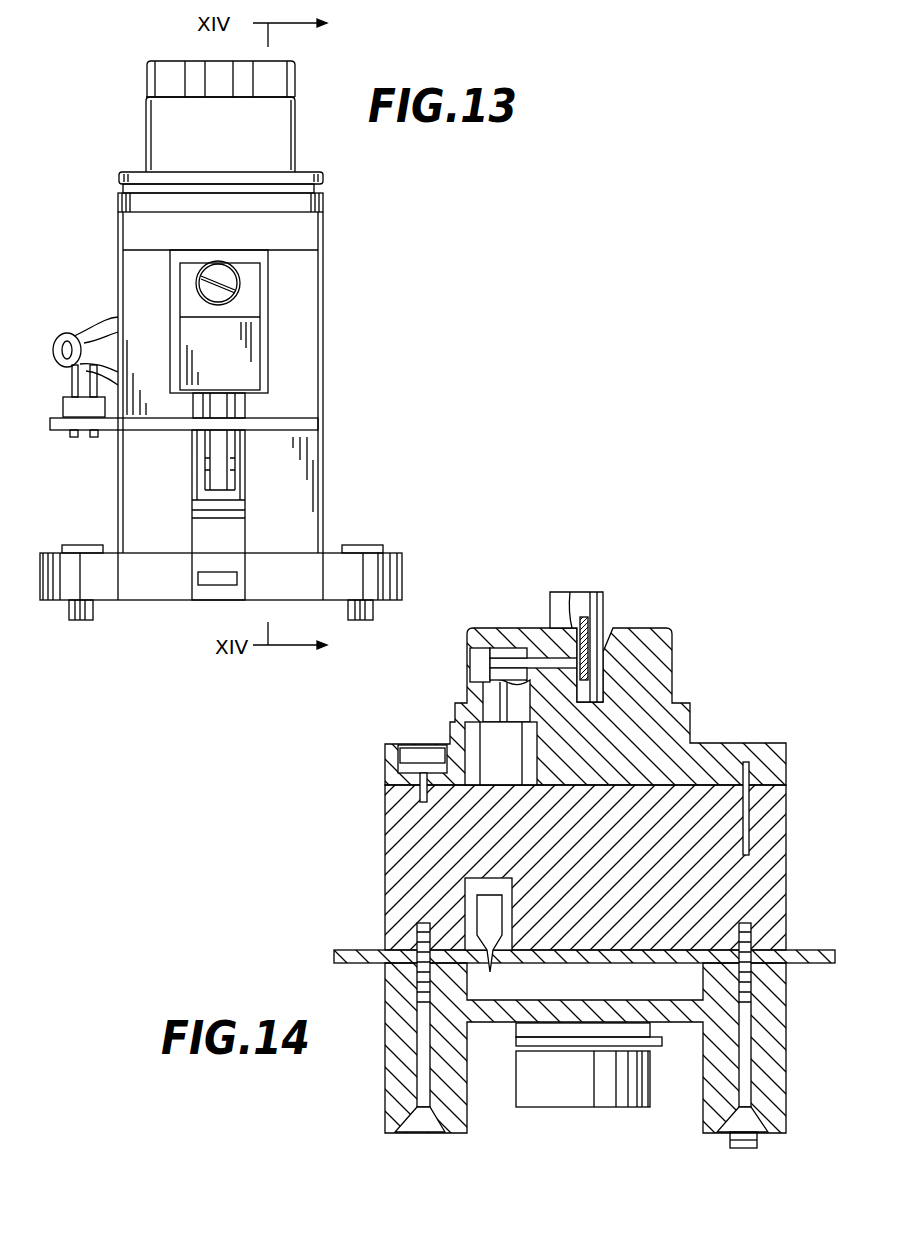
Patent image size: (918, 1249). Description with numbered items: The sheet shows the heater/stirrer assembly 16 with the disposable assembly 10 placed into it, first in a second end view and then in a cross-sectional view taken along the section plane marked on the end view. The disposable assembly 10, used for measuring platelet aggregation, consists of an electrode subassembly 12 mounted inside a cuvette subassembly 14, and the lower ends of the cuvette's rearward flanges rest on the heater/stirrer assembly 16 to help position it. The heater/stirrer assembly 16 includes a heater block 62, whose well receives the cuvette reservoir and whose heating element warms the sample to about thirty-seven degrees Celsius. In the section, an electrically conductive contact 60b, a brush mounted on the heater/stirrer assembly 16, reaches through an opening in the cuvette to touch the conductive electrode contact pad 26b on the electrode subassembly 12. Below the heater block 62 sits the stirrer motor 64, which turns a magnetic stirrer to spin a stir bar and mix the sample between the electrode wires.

In FIG. 13, the heater/stirrer assembly 16 is at (366, 291).
In FIG. 14, the disposable assembly 10 is at (621, 581).
In FIG. 14, the electrode subassembly 12 is at (620, 613).
In FIG. 14, the cuvette subassembly 14 is at (562, 572).
In FIG. 14, the conductive electrode contact pad 26b is at (577, 630).
In FIG. 14, the electrically conductive contact 60b is at (573, 667).
In FIG. 14, the heater block 62 is at (786, 802).
In FIG. 14, the stirrer motor 64 is at (576, 1094).